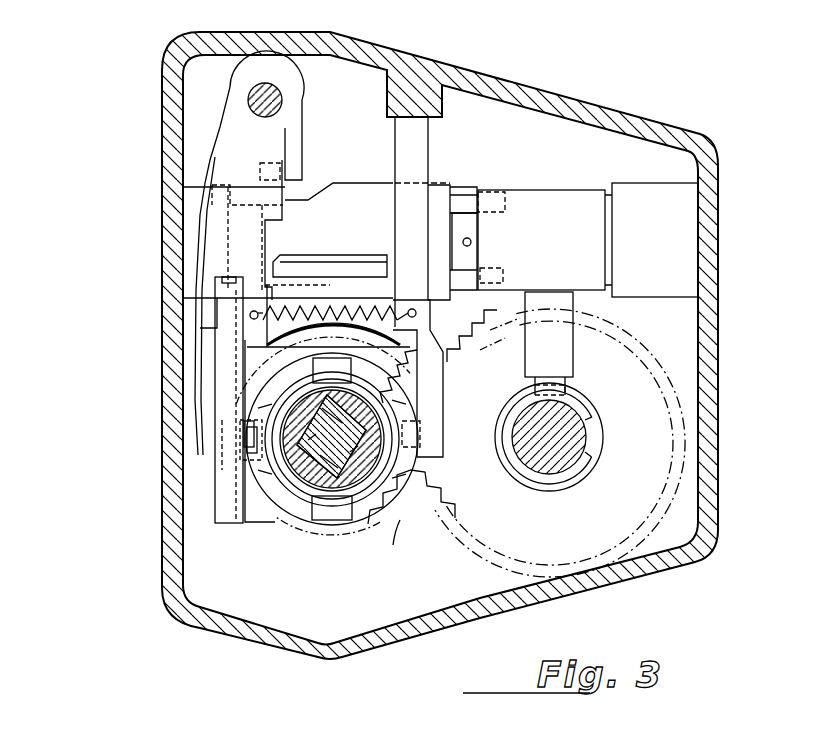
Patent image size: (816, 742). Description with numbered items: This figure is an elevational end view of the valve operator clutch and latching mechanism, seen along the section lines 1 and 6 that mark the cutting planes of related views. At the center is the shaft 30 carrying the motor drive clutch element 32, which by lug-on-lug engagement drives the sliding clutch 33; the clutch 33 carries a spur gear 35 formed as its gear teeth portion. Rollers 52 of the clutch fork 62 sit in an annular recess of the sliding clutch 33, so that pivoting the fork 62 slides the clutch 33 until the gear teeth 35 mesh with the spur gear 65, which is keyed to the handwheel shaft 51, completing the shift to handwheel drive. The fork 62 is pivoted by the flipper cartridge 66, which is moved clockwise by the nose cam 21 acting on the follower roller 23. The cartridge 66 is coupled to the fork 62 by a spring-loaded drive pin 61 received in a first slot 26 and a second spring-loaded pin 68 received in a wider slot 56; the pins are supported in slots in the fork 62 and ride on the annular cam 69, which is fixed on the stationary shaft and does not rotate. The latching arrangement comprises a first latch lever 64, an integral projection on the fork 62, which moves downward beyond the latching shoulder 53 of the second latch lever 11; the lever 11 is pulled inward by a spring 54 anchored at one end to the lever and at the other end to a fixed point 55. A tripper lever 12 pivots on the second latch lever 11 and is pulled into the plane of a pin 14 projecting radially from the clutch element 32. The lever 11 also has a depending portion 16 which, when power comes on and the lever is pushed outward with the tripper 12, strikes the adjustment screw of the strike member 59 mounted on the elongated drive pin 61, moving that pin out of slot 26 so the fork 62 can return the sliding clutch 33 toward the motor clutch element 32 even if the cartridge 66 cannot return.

The section line 1- 1 is at (330, 690).
The section line 6- 6 is at (172, 540).
The second latch lever 11 is at (225, 152).
The tripper lever 12 is at (232, 528).
The pin 14 is at (250, 440).
The depending portion 16 is at (300, 148).
The nose cam 21 is at (600, 420).
The follower roller 23 is at (570, 392).
The first recess or slot 26 is at (515, 198).
The shaft 30 is at (305, 505).
The clutch element 32 is at (405, 505).
The sliding clutch 33 is at (368, 498).
The spur gear 35 is at (395, 512).
The handwheel shaft 51 is at (555, 466).
The rollers 52 is at (260, 413).
The latching shoulder 53 is at (270, 300).
The spring 54 is at (330, 313).
The fixed point 55 is at (413, 308).
The second wider slot 56 is at (503, 276).
The strike member 59 is at (253, 160).
The spring-loaded drive pin 61 is at (458, 200).
The clutch fork 62 is at (360, 185).
The first latch lever 64 is at (340, 256).
The spur gear 65 is at (497, 552).
The flipper cartridge 66 is at (570, 215).
The second spring-loaded pin 68 is at (460, 292).
The annular cam 69 is at (468, 225).